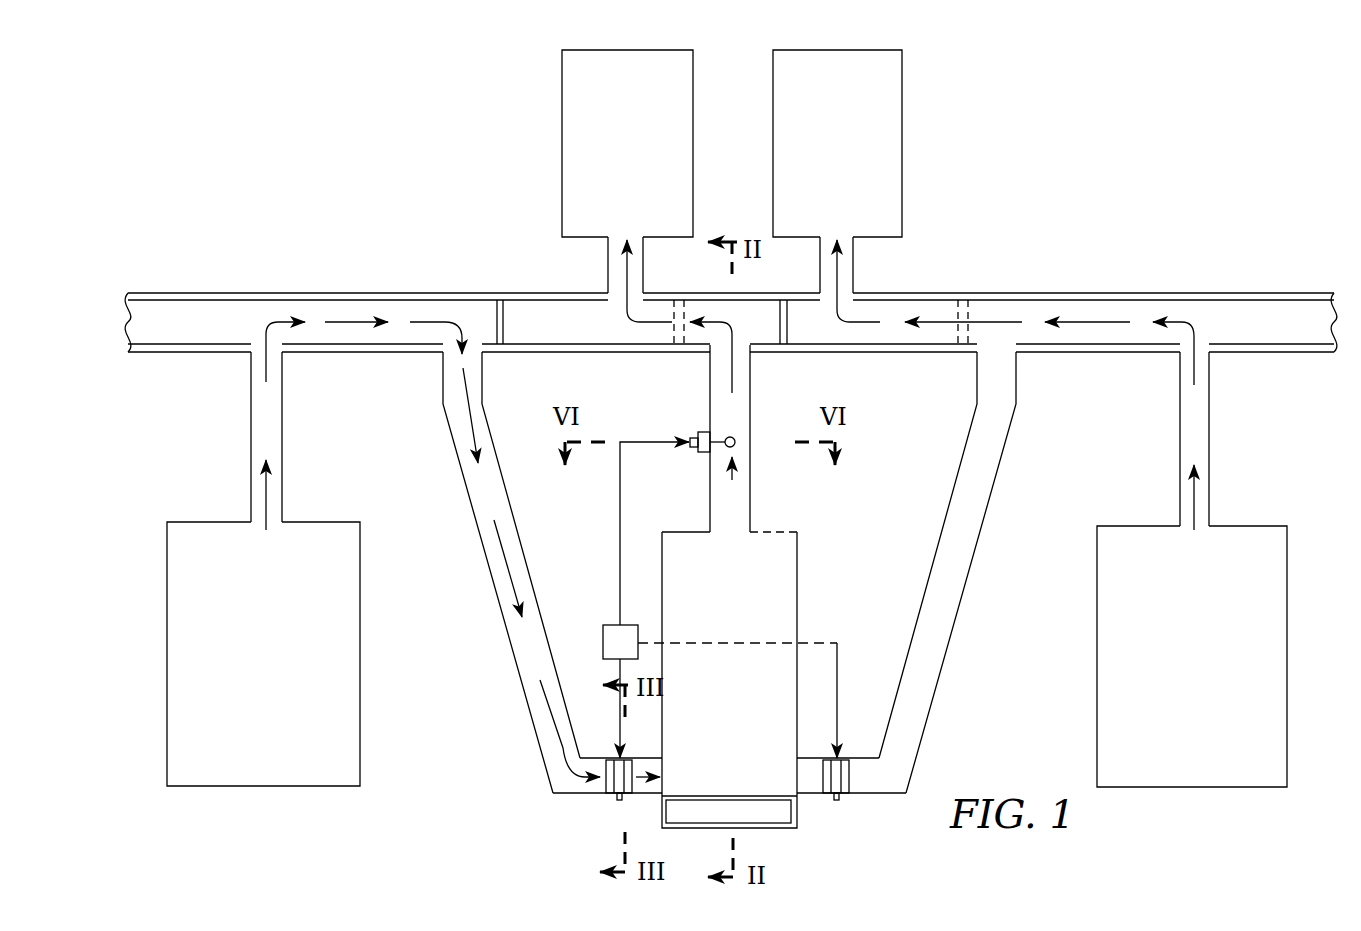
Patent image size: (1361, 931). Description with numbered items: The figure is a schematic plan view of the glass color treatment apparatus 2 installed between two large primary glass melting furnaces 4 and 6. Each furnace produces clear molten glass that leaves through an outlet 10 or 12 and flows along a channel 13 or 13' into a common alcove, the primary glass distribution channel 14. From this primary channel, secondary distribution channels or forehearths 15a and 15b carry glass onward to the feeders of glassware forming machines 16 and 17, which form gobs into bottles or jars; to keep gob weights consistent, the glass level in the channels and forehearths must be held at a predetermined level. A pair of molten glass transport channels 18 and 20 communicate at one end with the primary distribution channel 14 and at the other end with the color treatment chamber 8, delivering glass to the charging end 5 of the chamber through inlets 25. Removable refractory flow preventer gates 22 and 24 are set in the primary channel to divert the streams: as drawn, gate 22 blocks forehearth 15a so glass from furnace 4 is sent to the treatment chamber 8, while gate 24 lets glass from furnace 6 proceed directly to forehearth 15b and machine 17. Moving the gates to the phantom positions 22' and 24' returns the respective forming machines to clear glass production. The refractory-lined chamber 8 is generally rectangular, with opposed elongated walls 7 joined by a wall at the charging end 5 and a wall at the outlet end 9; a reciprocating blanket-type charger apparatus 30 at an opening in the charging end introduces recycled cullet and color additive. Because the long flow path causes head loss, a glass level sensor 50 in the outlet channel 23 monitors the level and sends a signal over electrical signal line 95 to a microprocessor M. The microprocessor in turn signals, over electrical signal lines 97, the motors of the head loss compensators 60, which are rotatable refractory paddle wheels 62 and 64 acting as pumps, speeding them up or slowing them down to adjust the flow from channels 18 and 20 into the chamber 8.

The apparatus 2 is at (505, 712).
The glass melting furnace 4 is at (158, 570).
The charging end 5 is at (688, 793).
The glass melting furnace 6 is at (1308, 605).
The elongated walls 7 is at (664, 616).
The color treatment chamber 8 is at (818, 572).
The outlet end 9 is at (677, 538).
The outlet 10 is at (284, 518).
The outlet 12 is at (1212, 518).
The channel 13 is at (295, 401).
The channel 13' is at (1227, 401).
The primary glass distribution channel 14 is at (333, 303).
The secondary glass distribution channel 15a is at (606, 252).
The secondary glass distribution channel 15b is at (856, 268).
The glassware forming machine 16 is at (525, 118).
The glassware forming machine 17 is at (928, 106).
The molten glass transport channel 18 is at (468, 490).
The molten glass transport channel 20 is at (964, 573).
The flow preventer gate 22 is at (482, 297).
The flow preventer gate position 22' is at (675, 297).
The outlet channel 23 is at (742, 410).
The flow preventer gate 24 is at (787, 301).
The flow preventer gate position 24' is at (939, 346).
The inlets 25 is at (657, 757).
The charger apparatus 30 is at (702, 815).
The glass level sensor 50 is at (695, 428).
The head loss compensators 60 is at (605, 802).
The paddle wheel 62 is at (619, 800).
The paddle wheel 64 is at (826, 800).
The electrical signal line 95 is at (620, 535).
The electrical signal lines 97 is at (620, 722).
The microprocessor M is at (610, 620).